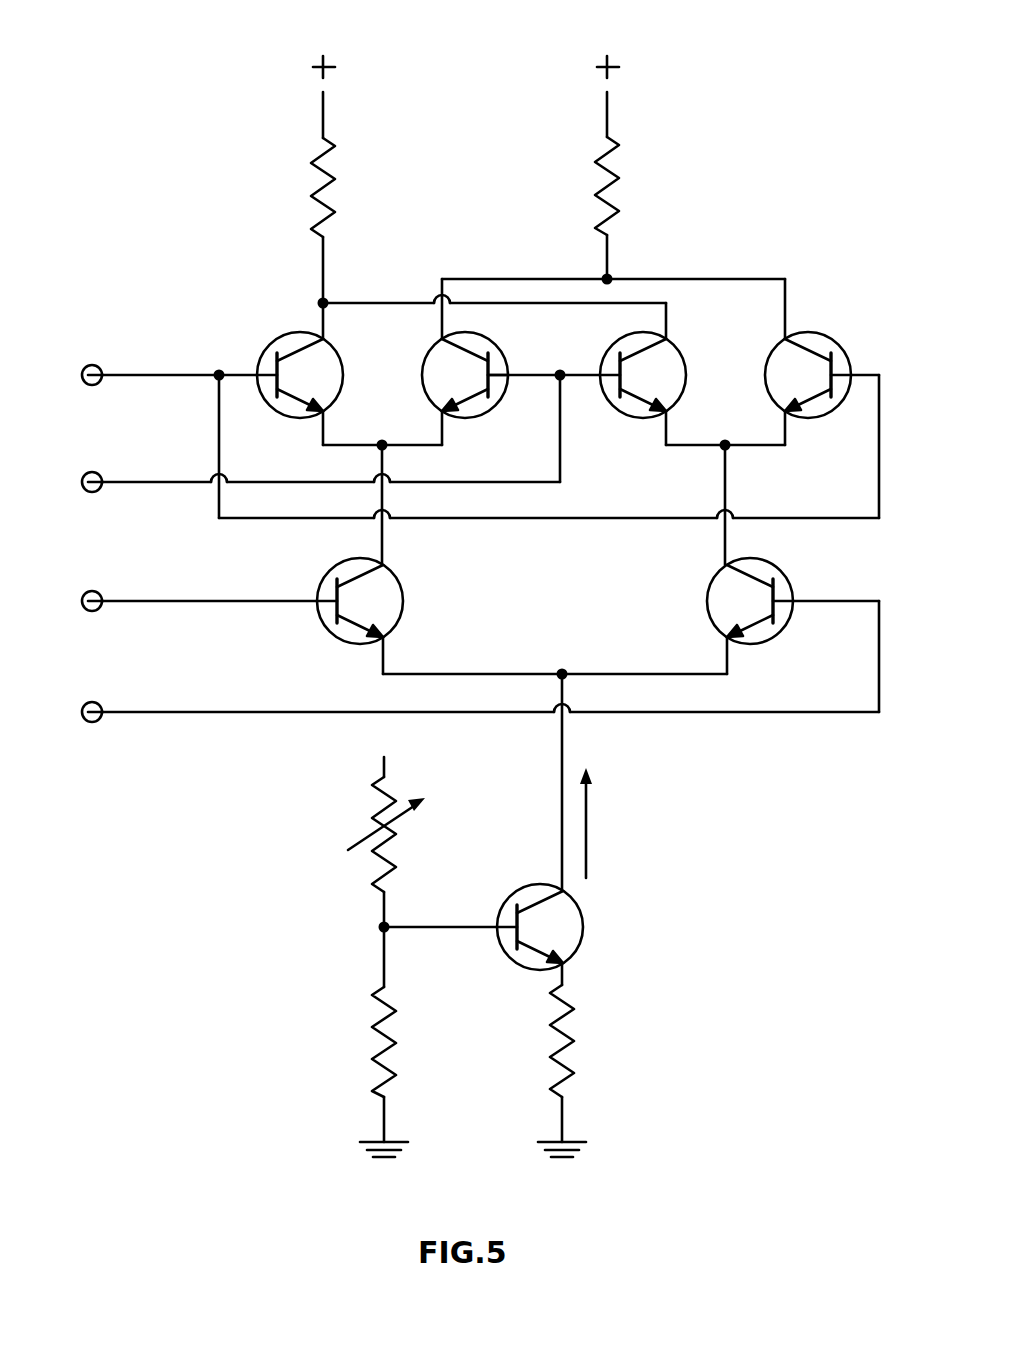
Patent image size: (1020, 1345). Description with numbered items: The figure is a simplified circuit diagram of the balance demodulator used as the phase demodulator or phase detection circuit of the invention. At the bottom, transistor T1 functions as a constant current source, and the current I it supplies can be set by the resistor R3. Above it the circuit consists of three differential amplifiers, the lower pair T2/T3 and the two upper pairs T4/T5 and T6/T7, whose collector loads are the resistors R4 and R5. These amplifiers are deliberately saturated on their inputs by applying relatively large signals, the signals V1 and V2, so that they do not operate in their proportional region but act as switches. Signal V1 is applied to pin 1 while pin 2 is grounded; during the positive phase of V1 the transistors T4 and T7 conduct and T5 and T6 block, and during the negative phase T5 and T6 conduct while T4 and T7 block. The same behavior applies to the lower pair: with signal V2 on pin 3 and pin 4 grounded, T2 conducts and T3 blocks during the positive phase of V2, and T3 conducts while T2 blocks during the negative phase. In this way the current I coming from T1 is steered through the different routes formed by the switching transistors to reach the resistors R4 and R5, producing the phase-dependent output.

The pin 1 is at (82, 375).
The pin 2 is at (82, 482).
The pin 3 is at (82, 601).
The pin 4 is at (82, 712).
The signal V1 is at (120, 437).
The signal V2 is at (116, 676).
The transistor T1 is at (560, 937).
The transistor T2 is at (385, 607).
The transistor T3 is at (737, 597).
The transistor T4 is at (265, 358).
The transistor T5 is at (437, 365).
The transistor T6 is at (613, 359).
The transistor T7 is at (778, 362).
The resistor R3 is at (375, 870).
The resistor R4 is at (332, 180).
The resistor R5 is at (616, 176).
The current I is at (584, 831).